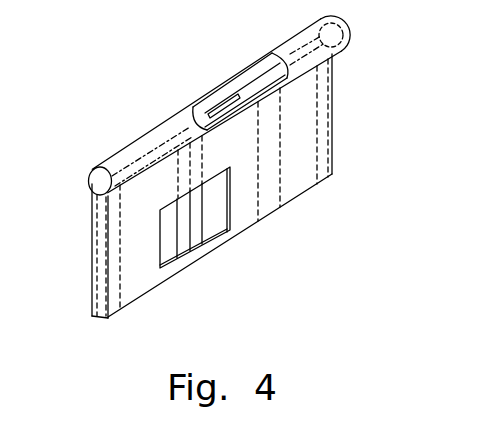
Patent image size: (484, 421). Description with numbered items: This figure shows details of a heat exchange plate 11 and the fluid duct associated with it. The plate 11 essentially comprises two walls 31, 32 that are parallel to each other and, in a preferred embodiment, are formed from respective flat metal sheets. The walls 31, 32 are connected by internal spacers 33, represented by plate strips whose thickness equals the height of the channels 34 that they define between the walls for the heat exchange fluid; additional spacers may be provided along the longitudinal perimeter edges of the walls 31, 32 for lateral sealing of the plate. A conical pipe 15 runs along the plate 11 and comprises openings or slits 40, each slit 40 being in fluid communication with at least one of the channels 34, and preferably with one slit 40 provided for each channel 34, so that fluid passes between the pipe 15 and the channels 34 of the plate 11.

The plate 11 is at (349, 229).
The conical pipe 15 is at (137, 137).
The wall 31 is at (108, 282).
The wall 32 is at (90, 283).
The internal spacer 33 is at (228, 240).
The channel 34 is at (183, 263).
The slit 40 is at (223, 107).